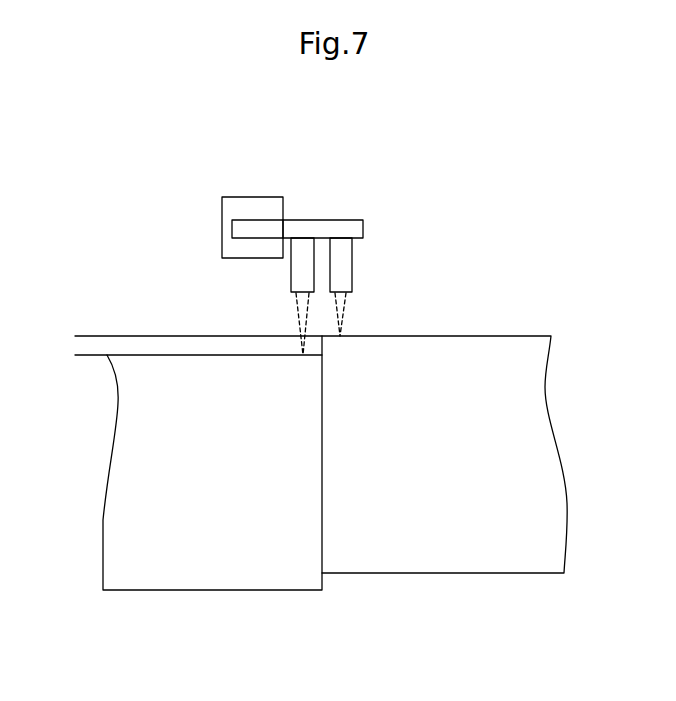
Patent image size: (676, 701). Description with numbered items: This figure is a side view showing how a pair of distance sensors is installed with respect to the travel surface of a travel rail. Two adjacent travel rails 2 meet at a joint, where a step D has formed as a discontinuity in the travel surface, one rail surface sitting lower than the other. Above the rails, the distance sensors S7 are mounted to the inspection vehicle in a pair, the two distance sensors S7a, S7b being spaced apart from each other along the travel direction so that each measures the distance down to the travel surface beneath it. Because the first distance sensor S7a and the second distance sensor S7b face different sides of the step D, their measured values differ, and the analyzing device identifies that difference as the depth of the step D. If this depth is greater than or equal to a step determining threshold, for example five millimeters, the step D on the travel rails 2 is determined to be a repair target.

The travel rail 2 is at (230, 573).
The distance sensors S7 is at (307, 226).
The distance sensor S7a is at (302, 245).
The distance sensor S7b is at (360, 239).
The step D is at (332, 352).